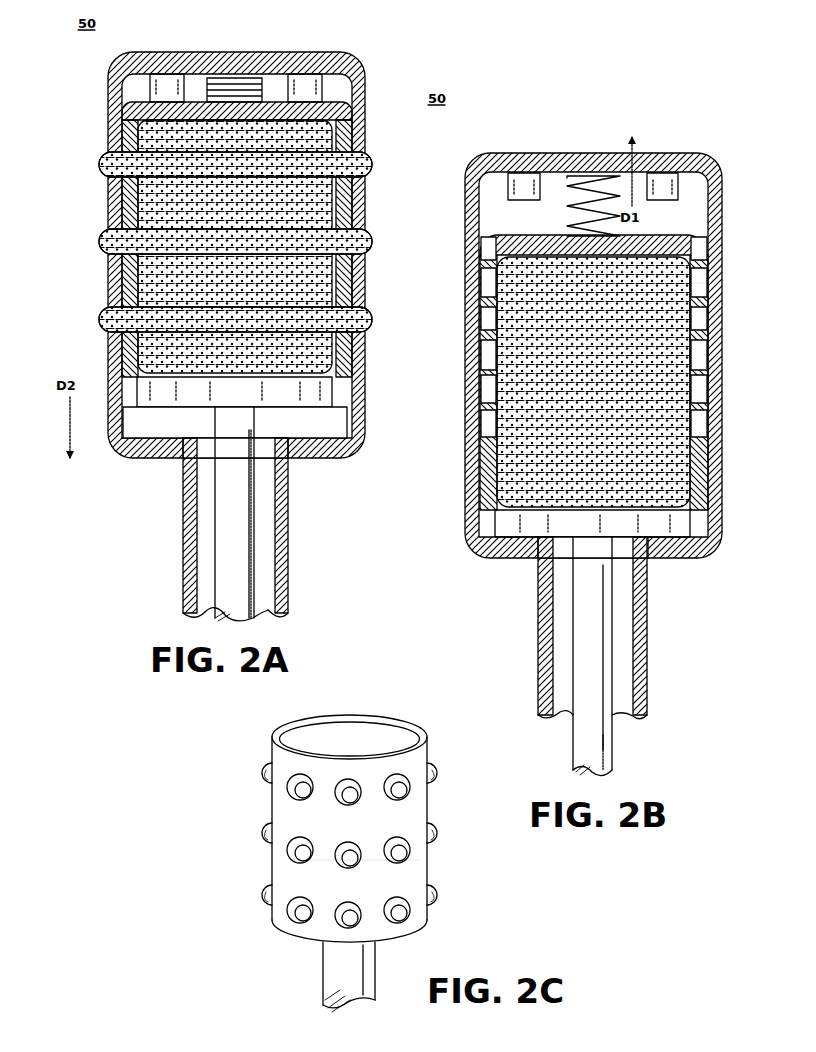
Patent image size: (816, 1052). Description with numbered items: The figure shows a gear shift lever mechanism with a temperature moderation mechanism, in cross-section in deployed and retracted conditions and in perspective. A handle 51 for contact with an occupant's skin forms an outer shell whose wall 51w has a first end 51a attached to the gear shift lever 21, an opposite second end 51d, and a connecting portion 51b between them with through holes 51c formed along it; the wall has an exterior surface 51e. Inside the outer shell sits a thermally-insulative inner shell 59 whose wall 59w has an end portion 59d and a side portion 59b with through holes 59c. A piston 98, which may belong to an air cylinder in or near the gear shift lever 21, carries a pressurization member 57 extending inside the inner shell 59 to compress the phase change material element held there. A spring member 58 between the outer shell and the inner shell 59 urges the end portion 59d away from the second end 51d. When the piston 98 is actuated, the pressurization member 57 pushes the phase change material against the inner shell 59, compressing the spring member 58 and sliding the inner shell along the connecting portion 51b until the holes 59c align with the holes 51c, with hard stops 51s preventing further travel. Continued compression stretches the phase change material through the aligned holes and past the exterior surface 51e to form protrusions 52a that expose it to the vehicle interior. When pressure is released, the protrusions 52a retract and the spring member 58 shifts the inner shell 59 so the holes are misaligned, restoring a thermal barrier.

In FIG. 2A, the handle 51 is at (366, 80).
In FIG. 2B, the handle 51 is at (724, 194).
In FIG. 2C, the handle 51 is at (428, 728).
In FIG. 2A, the first end 51a is at (305, 452).
In FIG. 2B, the first end 51a is at (662, 548).
In FIG. 2A, the connecting portion 51b is at (116, 104).
In FIG. 2B, the connecting portion 51b is at (472, 194).
In FIG. 2A, the through holes 51c is at (350, 158).
In FIG. 2B, the through holes 51c is at (722, 250).
In FIG. 2C, the through holes 51c is at (300, 838).
In FIG. 2A, the second end 51d is at (152, 52).
In FIG. 2B, the second end 51d is at (510, 153).
In FIG. 2C, the second end 51d is at (330, 732).
In FIG. 2A, the exterior surface 51e is at (362, 338).
In FIG. 2B, the exterior surface 51e is at (722, 418).
In FIG. 2C, the exterior surface 51e is at (405, 873).
In FIG. 2A, the hard stops 51s is at (168, 82).
In FIG. 2B, the hard stops 51s is at (525, 182).
In FIG. 2A, the wall 51w is at (352, 420).
In FIG. 2B, the wall 51w is at (473, 500).
In FIG. 2A, the protrusions 52a is at (97, 320).
In FIG. 2C, the protrusions 52a is at (262, 895).
In FIG. 2A, the pressurization member 57 is at (180, 393).
In FIG. 2B, the pressurization member 57 is at (537, 535).
In FIG. 2A, the spring member 58 is at (236, 86).
In FIG. 2B, the spring member 58 is at (586, 183).
In FIG. 2A, the inner shell 59 is at (122, 212).
In FIG. 2B, the inner shell 59 is at (478, 318).
In FIG. 2A, the side portion 59b is at (118, 290).
In FIG. 2B, the side portion 59b is at (480, 378).
In FIG. 2A, the through holes 59c is at (345, 170).
In FIG. 2B, the through holes 59c is at (712, 283).
In FIG. 2B, the end portion 59d is at (542, 245).
In FIG. 2A, the wall 59w is at (352, 292).
In FIG. 2B, the wall 59w is at (708, 350).
In FIG. 2A, the gear shift lever 21 is at (186, 545).
In FIG. 2B, the gear shift lever 21 is at (545, 640).
In FIG. 2C, the gear shift lever 21 is at (340, 962).
In FIG. 2A, the piston 98 is at (240, 600).
In FIG. 2B, the piston 98 is at (572, 730).